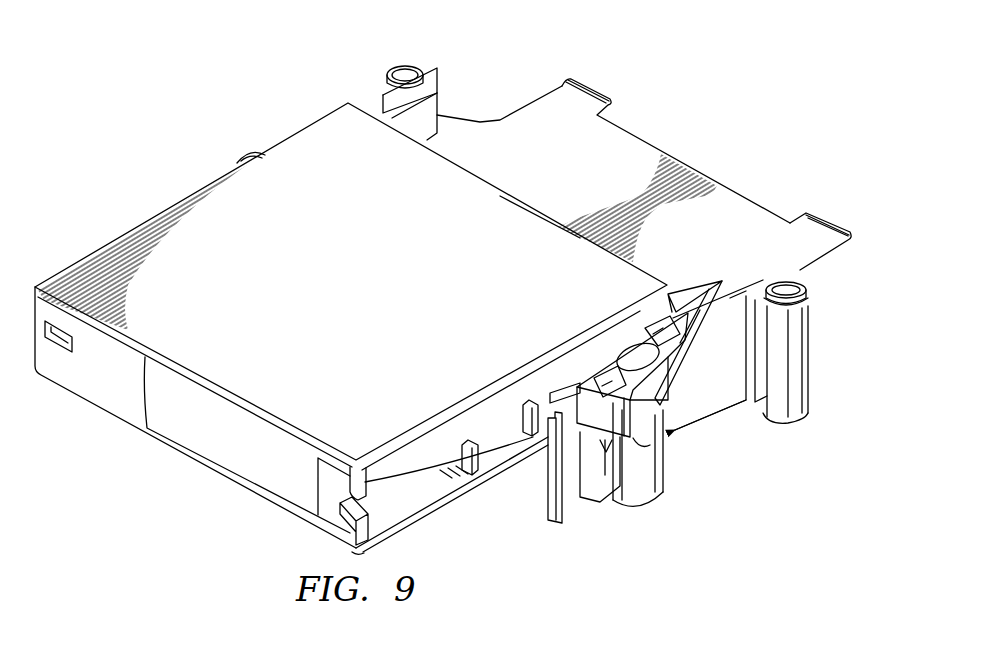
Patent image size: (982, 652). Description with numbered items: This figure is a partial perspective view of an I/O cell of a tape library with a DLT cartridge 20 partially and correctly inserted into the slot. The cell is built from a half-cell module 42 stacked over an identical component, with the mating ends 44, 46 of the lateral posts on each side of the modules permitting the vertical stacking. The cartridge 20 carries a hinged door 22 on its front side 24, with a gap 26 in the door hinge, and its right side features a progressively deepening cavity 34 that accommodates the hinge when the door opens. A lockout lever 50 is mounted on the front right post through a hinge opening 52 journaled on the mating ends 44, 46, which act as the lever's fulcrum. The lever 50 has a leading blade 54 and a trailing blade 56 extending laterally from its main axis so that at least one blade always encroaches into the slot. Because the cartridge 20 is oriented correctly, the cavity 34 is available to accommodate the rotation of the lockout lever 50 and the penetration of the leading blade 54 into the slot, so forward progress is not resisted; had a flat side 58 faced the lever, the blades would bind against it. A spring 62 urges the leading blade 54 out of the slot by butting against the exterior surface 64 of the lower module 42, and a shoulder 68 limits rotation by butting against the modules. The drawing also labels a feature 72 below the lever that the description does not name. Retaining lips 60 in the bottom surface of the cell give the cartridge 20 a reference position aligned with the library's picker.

The DLT format cartridge 20 is at (508, 190).
The hinged door 22 is at (242, 465).
The front side 24 is at (108, 384).
The gap 26 is at (378, 507).
The cavity 34 is at (428, 490).
The half-cell module 42 is at (648, 134).
The mating end 44 is at (409, 72).
The mating end 46 is at (788, 425).
The lockout lever 50 is at (684, 388).
The hinge opening 52 is at (632, 350).
The leading blade 54 is at (562, 392).
The trailing blade 56 is at (680, 285).
The flat side 58 is at (545, 213).
The retaining lips 60 is at (587, 86).
The spring 62 is at (588, 470).
The exterior surface 64 is at (553, 472).
The shoulder 68 is at (712, 316).
The spring 72 is at (653, 440).